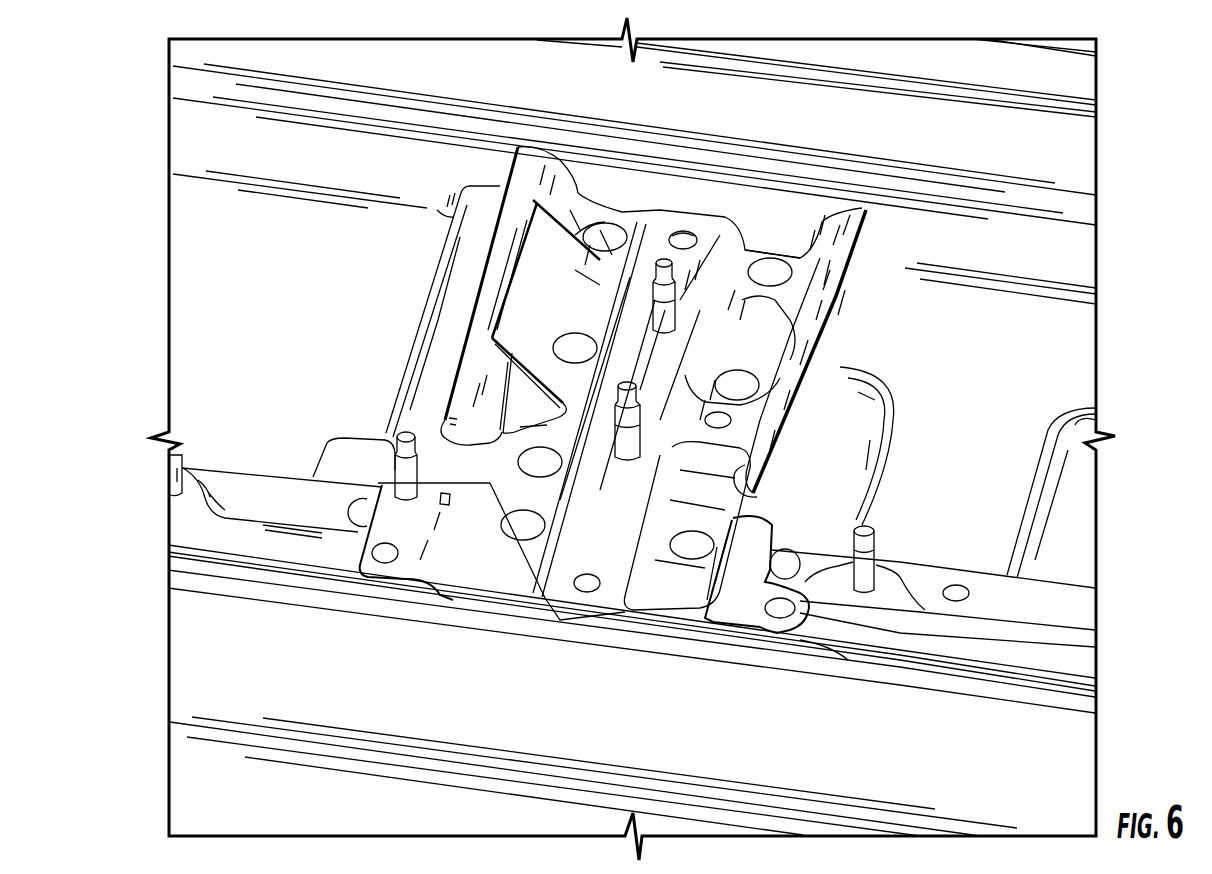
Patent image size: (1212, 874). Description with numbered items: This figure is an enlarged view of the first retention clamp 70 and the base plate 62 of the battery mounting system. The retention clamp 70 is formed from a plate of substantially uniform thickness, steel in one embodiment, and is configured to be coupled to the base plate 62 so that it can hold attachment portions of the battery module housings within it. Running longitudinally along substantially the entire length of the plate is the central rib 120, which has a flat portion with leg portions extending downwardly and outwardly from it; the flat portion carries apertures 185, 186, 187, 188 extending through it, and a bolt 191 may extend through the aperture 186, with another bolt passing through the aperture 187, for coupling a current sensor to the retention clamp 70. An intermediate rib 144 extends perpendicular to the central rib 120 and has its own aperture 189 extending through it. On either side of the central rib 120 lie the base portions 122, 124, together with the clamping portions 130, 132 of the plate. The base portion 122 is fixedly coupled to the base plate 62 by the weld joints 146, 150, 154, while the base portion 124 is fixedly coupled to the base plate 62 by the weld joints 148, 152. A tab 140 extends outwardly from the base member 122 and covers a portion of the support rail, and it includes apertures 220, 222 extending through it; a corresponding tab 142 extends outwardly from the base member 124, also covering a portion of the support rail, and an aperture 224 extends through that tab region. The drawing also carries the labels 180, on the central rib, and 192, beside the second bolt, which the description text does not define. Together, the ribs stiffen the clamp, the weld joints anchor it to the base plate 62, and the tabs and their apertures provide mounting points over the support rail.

The base plate 62 is at (955, 341).
The first retention clamp 70 is at (568, 583).
The central rib 120 is at (708, 228).
The base portion 122 is at (623, 228).
The base portion 124 is at (762, 270).
The clamping portion 130 is at (533, 143).
The clamping portion 132 is at (838, 213).
The tab 140 is at (427, 568).
The tab 142 is at (751, 620).
The intermediate rib 144 is at (727, 436).
The weld joint 146 is at (601, 240).
The weld joint 148 is at (750, 253).
The weld joint 150 is at (592, 350).
The weld joint 152 is at (742, 380).
The weld joint 154 is at (558, 457).
The central rib 180 is at (620, 530).
The aperture 185 is at (683, 232).
The aperture 186 is at (672, 320).
The aperture 187 is at (638, 448).
The aperture 188 is at (593, 578).
The aperture 189 is at (704, 419).
The bolt 191 is at (676, 288).
The stud tip 192 is at (641, 418).
The aperture 220 is at (405, 498).
The aperture 222 is at (399, 548).
The aperture 224 is at (772, 602).